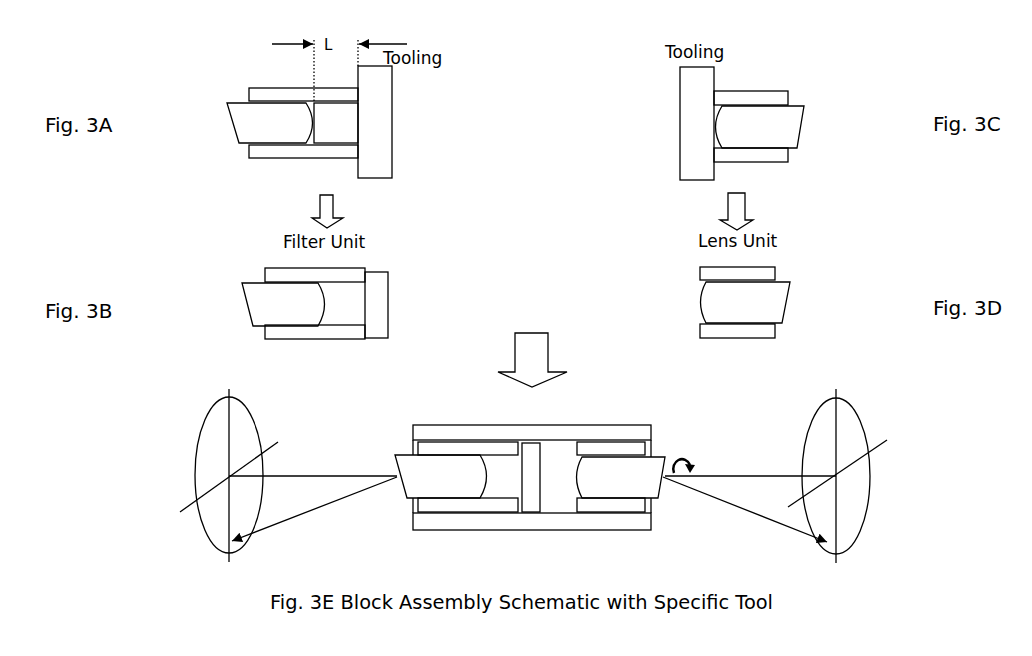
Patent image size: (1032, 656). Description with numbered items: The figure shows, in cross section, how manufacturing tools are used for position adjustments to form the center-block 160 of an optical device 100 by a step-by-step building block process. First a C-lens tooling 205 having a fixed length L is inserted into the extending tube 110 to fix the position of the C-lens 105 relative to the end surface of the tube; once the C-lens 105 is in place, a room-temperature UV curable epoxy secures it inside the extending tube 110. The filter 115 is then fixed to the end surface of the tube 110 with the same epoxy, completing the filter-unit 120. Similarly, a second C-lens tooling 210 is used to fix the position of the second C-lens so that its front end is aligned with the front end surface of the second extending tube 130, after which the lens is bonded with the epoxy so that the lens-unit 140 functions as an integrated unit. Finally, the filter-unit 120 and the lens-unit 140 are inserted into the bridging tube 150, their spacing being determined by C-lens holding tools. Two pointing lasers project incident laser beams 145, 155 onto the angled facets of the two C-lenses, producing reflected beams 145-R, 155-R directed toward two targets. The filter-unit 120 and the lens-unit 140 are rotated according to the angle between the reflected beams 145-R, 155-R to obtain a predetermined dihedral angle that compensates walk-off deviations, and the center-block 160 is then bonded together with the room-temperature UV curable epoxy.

In FIG. 3E, the optical device 100 is at (555, 491).
In FIG. 3A, the C-lens 105 is at (245, 127).
In FIG. 3B, the C-lens 105 is at (268, 299).
In FIG. 3A, the extending tube 110 is at (285, 153).
In FIG. 3B, the extending tube 110 is at (310, 332).
In FIG. 3B, the filter 115 is at (380, 318).
In FIG. 3B, the filter-unit 120 is at (325, 296).
In FIG. 3C, the filter-unit 120 is at (777, 140).
In FIG. 3C, the second extending tube 130 is at (745, 95).
In FIG. 3D, the lens-unit 140 is at (799, 266).
In FIG. 3E, the incident laser beam 145 is at (287, 473).
In FIG. 3E, the reflected beam 145-R is at (308, 508).
In FIG. 3E, the bridging tube 150 is at (453, 430).
In FIG. 3E, the incident laser beam 155 is at (702, 475).
In FIG. 3E, the reflected beam 155-R is at (728, 503).
In FIG. 3E, the center-block 160 is at (530, 442).
In FIG. 3A, the C-lens tooling 205 is at (348, 129).
In FIG. 3C, the second C-lens tooling 210 is at (690, 118).